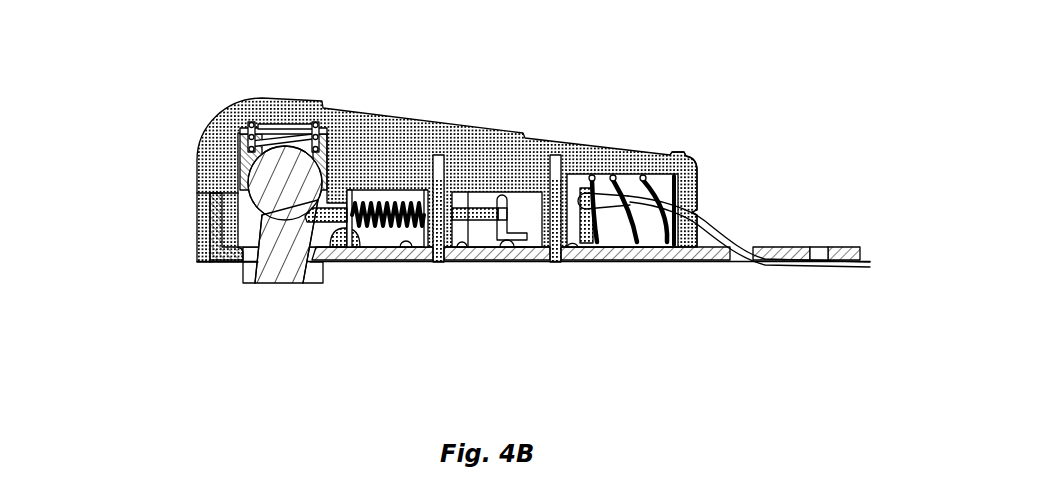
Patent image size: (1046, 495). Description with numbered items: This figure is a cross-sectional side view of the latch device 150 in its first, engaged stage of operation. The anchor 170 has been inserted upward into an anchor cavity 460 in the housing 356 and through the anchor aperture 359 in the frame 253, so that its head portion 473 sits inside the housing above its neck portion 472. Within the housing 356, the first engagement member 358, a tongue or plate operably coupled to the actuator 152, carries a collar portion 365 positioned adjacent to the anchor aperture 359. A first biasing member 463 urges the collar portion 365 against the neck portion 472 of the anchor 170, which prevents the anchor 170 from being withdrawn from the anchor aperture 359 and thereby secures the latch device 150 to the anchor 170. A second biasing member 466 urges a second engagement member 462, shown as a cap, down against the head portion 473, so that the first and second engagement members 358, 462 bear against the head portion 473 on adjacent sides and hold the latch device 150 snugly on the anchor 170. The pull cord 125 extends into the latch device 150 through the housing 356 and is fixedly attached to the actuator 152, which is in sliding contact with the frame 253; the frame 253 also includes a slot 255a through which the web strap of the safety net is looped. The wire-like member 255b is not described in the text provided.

The latch device 150 is at (197, 62).
The pull cord 125 is at (703, 160).
The actuator 152 is at (517, 262).
The anchor 170 is at (255, 187).
The frame 253 is at (790, 247).
The slot 255a is at (818, 247).
The wire 255b is at (730, 253).
The housing 356 is at (390, 122).
The first engagement member 358 is at (450, 262).
The anchor aperture 359 is at (243, 262).
The collar portion 365 is at (350, 262).
The anchor cavity 460 is at (245, 219).
The second engagement member 462 is at (238, 155).
The first biasing member 463 is at (397, 210).
The second biasing member 466 is at (276, 130).
The neck portion 472 is at (327, 262).
The head portion 473 is at (300, 170).